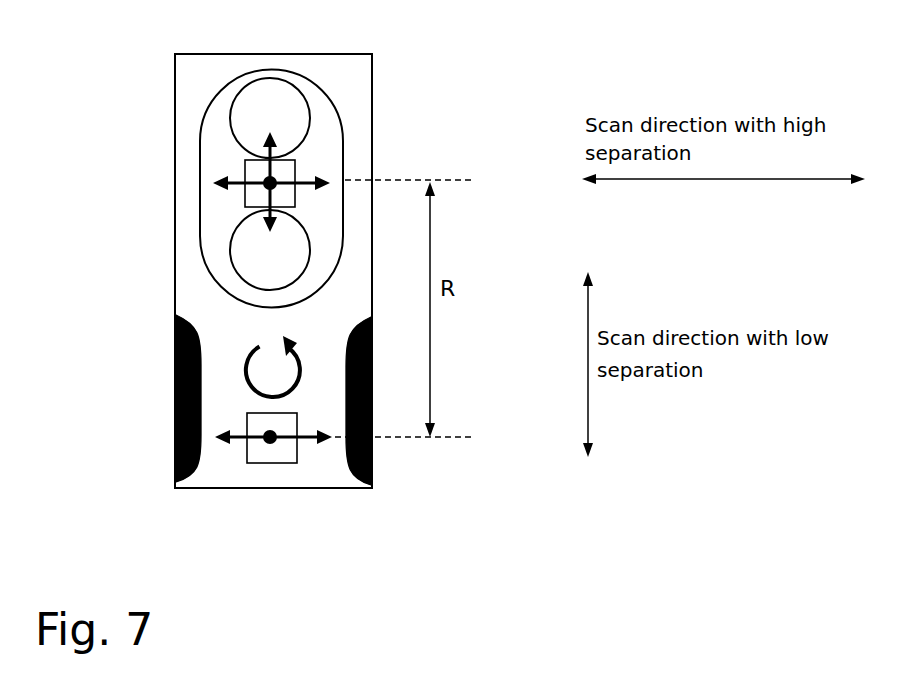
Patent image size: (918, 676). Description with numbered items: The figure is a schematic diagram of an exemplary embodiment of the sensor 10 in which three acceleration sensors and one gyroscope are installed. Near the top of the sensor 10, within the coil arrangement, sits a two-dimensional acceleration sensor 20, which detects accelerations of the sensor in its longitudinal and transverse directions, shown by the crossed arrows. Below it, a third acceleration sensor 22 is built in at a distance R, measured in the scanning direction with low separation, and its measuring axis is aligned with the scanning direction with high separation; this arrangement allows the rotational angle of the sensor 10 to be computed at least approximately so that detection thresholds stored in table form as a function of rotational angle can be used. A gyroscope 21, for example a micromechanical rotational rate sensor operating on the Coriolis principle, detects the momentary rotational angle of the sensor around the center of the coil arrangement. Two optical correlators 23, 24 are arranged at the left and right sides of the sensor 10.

The sensor 10 is at (355, 77).
The 2D acceleration sensor 20 is at (243, 167).
The gyroscope 21 is at (240, 355).
The third acceleration sensor 22 is at (258, 442).
The optical correlator 23 is at (175, 390).
The optical correlator 24 is at (372, 462).